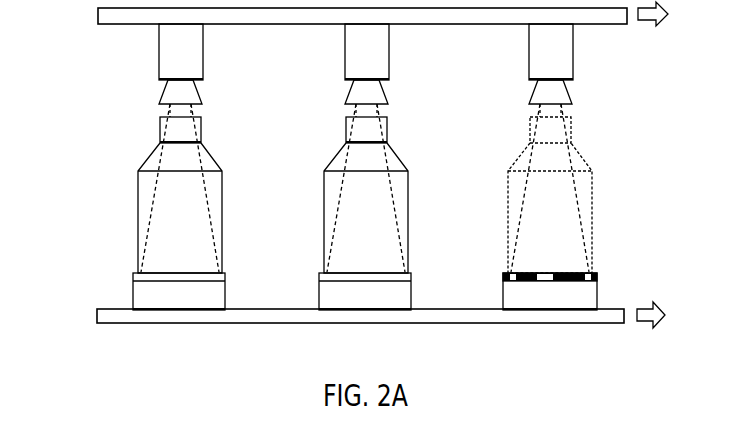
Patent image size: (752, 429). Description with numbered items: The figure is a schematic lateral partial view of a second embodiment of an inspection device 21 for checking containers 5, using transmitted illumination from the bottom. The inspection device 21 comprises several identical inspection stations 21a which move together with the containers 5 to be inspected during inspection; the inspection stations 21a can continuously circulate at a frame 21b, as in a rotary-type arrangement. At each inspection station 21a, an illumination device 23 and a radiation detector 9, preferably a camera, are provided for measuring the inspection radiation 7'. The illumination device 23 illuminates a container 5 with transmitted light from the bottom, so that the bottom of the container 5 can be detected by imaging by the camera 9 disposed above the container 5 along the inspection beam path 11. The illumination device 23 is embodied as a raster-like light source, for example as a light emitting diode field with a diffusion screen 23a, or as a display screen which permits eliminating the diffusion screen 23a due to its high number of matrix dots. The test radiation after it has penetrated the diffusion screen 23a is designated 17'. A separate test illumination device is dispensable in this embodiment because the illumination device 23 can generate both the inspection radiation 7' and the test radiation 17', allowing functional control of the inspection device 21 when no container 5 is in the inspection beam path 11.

The inspection device 21 is at (83, 52).
The inspection station 21a is at (188, 325).
The frame 21b is at (613, 24).
The radiation detector 9 is at (158, 52).
The container 5 is at (148, 160).
The inspection radiation 7' is at (260, 188).
The inspection beam path 11 is at (595, 148).
The test radiation 17' is at (573, 188).
The illumination device 23 is at (134, 290).
The diffusion screen 23a is at (598, 278).